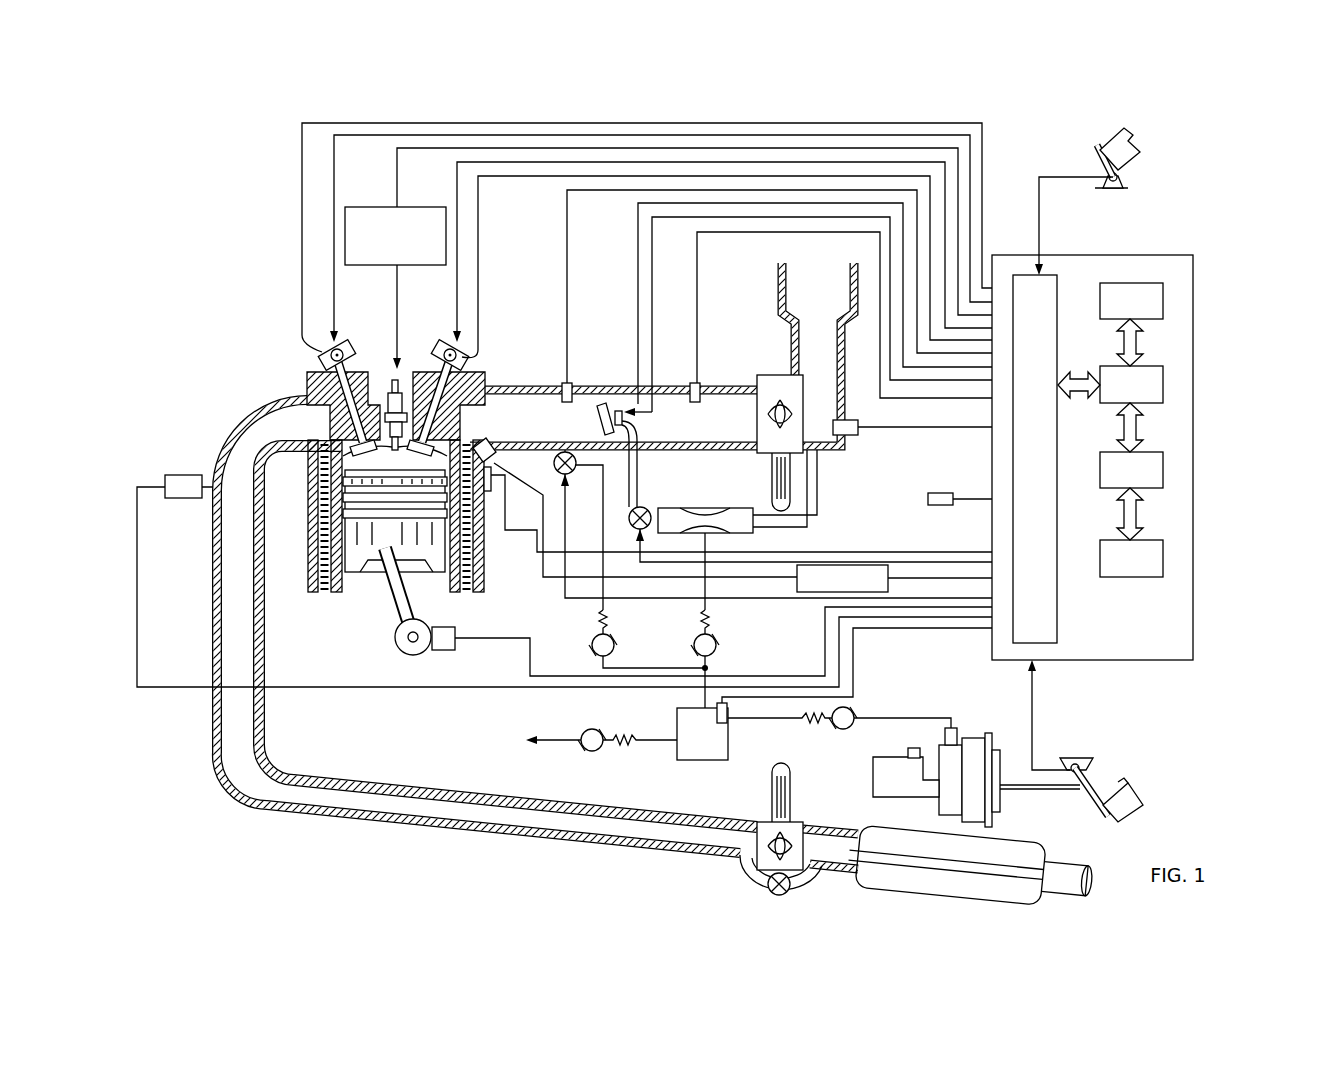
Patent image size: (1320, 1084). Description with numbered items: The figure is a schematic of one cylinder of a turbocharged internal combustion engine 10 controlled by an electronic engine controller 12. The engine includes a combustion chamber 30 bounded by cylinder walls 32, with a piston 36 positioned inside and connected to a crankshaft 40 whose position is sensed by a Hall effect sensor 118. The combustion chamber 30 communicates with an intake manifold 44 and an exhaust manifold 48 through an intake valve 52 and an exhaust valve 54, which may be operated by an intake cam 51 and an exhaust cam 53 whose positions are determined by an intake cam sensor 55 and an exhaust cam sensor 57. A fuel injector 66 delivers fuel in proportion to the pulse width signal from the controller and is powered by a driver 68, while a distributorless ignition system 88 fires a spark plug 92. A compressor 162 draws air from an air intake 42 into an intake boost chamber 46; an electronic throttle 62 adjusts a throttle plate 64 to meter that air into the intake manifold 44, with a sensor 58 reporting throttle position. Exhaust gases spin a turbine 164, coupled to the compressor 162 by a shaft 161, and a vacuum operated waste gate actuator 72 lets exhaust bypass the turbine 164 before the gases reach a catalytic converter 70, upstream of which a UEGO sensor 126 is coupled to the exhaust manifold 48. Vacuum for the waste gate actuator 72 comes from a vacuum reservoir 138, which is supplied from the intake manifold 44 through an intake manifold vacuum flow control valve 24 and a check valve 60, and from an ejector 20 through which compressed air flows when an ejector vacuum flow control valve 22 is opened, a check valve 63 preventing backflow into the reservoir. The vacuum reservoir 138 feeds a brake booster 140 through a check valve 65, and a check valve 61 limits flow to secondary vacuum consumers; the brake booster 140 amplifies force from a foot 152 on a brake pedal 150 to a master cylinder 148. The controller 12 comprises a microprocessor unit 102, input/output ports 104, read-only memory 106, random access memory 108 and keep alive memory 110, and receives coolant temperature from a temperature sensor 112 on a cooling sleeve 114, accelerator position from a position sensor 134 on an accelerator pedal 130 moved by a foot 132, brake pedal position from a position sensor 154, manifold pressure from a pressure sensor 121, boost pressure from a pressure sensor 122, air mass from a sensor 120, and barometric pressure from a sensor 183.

The internal combustion engine 10 is at (245, 327).
The electronic engine controller 12 is at (1134, 443).
The ejector 20 is at (702, 506).
The ejector vacuum flow control valve 22 is at (634, 530).
The intake manifold vacuum flow control valve 24 is at (553, 465).
The combustion chamber 30 is at (390, 462).
The cylinder walls 32 is at (340, 600).
The piston 36 is at (382, 570).
The crankshaft 40 is at (403, 652).
The air intake 42 is at (809, 306).
The intake manifold 44 is at (517, 430).
The intake boost chamber 46 is at (682, 430).
The exhaust manifold 48 is at (267, 435).
The intake cam 51 is at (446, 345).
The intake valve 52 is at (438, 444).
The exhaust cam 53 is at (340, 345).
The exhaust valve 54 is at (345, 440).
The intake cam sensor 55 is at (465, 358).
The exhaust cam sensor 57 is at (325, 352).
The throttle position sensor 58 is at (638, 448).
The check valve 60 is at (612, 640).
The check valve 61 is at (598, 750).
The electronic throttle 62 is at (600, 402).
The check valve 63 is at (716, 644).
The throttle plate 64 is at (612, 398).
The check valve 65 is at (838, 729).
The fuel injector 66 is at (494, 466).
The driver 68 is at (888, 582).
The catalytic converter 70 is at (858, 884).
The waste gate actuator 72 is at (767, 884).
The distributorless ignition system 88 is at (360, 207).
The spark plug 92 is at (400, 376).
The microprocessor unit 102 is at (1163, 390).
The input/output ports 104 is at (1058, 282).
The read-only memory 106 is at (1163, 300).
The random access memory 108 is at (1163, 470).
The keep alive memory 110 is at (1163, 558).
The temperature sensor 112 is at (491, 520).
The cooling sleeve 114 is at (480, 567).
The Hall effect sensor 118 is at (442, 652).
The air mass sensor 120 is at (853, 436).
The pressure sensor 121 is at (560, 380).
The pressure sensor 122 is at (702, 382).
The Universal Exhaust Gas Oxygen sensor 126 is at (167, 476).
The accelerator pedal 130 is at (1093, 152).
The foot 132 is at (1138, 145).
The position sensor 134 is at (1122, 176).
The vacuum reservoir 138 is at (677, 714).
The brake booster 140 is at (977, 738).
The master cylinder 148 is at (873, 770).
The brake pedal 150 is at (1093, 815).
The foot 152 is at (1124, 782).
The position sensor 154 is at (1064, 758).
The shaft 161 is at (792, 798).
The compressor 162 is at (786, 375).
The turbine 164 is at (762, 822).
The barometric pressure sensor 183 is at (940, 493).